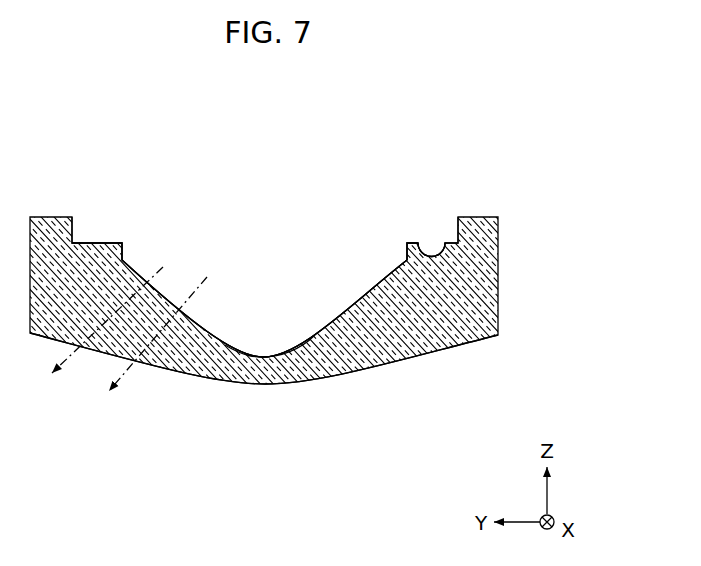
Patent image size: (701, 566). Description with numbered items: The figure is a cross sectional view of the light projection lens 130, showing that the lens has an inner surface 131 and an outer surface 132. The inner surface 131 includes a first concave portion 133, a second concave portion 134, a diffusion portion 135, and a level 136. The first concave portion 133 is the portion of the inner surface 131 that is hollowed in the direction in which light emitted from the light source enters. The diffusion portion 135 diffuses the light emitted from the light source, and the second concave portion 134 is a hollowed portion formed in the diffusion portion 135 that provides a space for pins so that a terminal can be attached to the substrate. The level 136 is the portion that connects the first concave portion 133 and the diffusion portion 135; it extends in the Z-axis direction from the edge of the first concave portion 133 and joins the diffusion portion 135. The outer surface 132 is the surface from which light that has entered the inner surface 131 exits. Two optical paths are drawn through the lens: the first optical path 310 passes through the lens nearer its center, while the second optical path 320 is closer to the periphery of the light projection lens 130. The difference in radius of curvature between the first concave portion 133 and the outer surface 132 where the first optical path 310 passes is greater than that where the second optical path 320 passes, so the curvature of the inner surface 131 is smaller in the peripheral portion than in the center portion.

The light projection lens 130 is at (498, 247).
The inner surface 131 is at (447, 165).
The outer surface 132 is at (382, 371).
The first concave portion 133 is at (275, 352).
The second concave portion 134 is at (433, 255).
The diffusion portion 135 is at (93, 241).
The level 136 is at (128, 257).
The first optical path 310 is at (127, 383).
The second optical path 320 is at (73, 363).